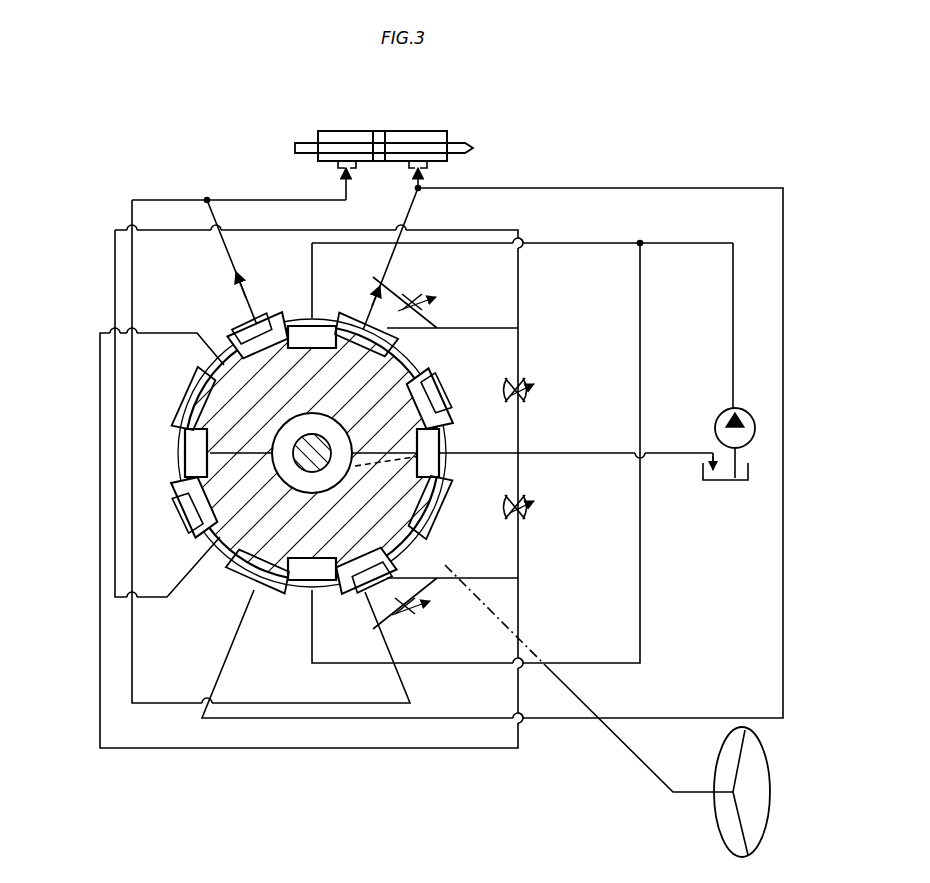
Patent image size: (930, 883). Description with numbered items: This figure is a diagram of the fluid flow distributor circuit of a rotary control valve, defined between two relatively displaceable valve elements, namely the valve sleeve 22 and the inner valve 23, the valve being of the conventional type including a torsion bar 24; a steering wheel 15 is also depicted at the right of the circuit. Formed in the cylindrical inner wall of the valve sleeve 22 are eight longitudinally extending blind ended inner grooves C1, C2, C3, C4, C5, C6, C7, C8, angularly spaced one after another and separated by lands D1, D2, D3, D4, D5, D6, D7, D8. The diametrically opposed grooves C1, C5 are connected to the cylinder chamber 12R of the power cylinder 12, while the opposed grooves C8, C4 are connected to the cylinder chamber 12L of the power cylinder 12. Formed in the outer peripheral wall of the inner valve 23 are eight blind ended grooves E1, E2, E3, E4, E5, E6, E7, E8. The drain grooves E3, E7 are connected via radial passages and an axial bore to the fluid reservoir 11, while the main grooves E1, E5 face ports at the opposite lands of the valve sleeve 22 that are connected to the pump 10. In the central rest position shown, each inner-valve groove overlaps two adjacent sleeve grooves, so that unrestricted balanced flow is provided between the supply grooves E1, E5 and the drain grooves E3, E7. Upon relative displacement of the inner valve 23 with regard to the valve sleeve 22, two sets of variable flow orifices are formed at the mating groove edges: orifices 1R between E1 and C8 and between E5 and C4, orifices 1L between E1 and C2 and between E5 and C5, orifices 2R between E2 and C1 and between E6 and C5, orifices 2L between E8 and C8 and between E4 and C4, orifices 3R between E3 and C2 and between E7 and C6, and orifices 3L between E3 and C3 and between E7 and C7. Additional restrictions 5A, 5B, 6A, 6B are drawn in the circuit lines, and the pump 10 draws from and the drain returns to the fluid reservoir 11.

The pump 10 is at (749, 416).
The fluid reservoir 11 is at (728, 483).
The power cylinder 12 is at (379, 131).
The cylinder chamber 12L is at (340, 136).
The cylinder chamber 12R is at (432, 136).
The steering wheel 15 is at (716, 836).
The valve sleeve 22 is at (218, 372).
The inner valve 23 is at (322, 536).
The torsion bar 24 is at (315, 432).
The variable orifice 5A is at (423, 292).
The variable orifice 5B is at (423, 610).
The variable orifice 6A is at (531, 380).
The variable orifice 6B is at (531, 497).
The variable flow orifice 1L is at (348, 320).
The variable flow orifice 1R is at (270, 322).
The variable flow orifice 2L is at (242, 344).
The variable flow orifice 2R is at (232, 600).
The variable flow orifice 3L is at (182, 410).
The variable flow orifice 3R is at (184, 498).
The inner groove C1 is at (330, 318).
The inner groove C2 is at (436, 386).
The inner groove C3 is at (446, 498).
The inner groove C4 is at (390, 582).
The inner groove C5 is at (262, 588).
The inner groove C6 is at (192, 520).
The inner groove C7 is at (190, 400).
The inner groove C8 is at (250, 330).
The land D1 is at (374, 324).
The land D2 is at (440, 402).
The land D3 is at (440, 512).
The land D4 is at (365, 600).
The land D5 is at (236, 598).
The land D6 is at (210, 530).
The land D7 is at (200, 385).
The land D8 is at (262, 326).
The main groove E1 is at (312, 328).
The groove E2 is at (450, 358).
The drain groove E3 is at (445, 453).
The groove E4 is at (432, 536).
The main groove E5 is at (322, 585).
The groove E6 is at (214, 578).
The drain groove E7 is at (190, 452).
The groove E8 is at (226, 342).